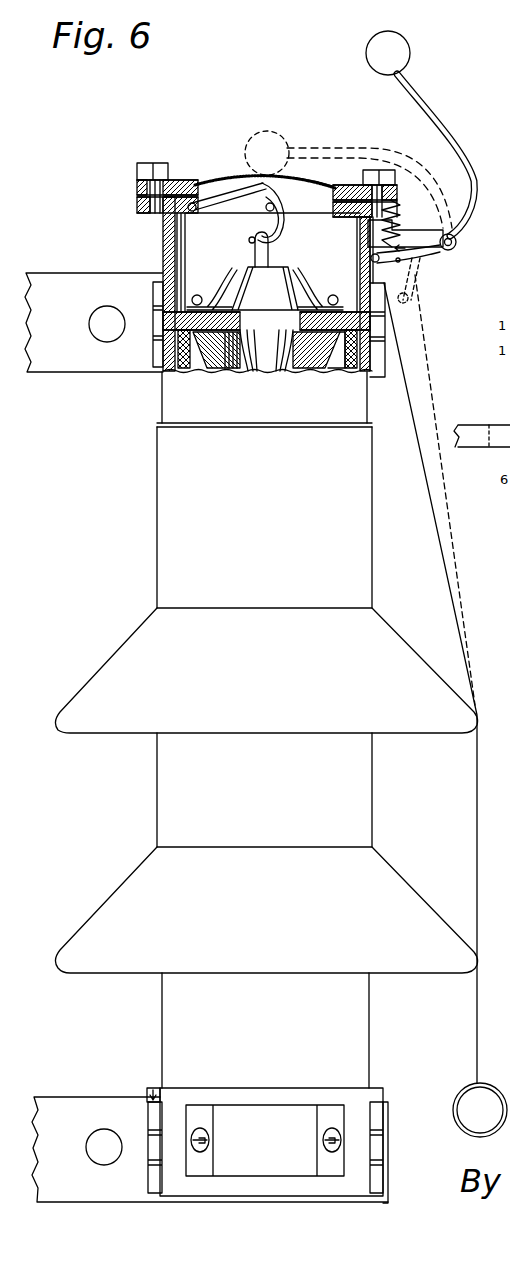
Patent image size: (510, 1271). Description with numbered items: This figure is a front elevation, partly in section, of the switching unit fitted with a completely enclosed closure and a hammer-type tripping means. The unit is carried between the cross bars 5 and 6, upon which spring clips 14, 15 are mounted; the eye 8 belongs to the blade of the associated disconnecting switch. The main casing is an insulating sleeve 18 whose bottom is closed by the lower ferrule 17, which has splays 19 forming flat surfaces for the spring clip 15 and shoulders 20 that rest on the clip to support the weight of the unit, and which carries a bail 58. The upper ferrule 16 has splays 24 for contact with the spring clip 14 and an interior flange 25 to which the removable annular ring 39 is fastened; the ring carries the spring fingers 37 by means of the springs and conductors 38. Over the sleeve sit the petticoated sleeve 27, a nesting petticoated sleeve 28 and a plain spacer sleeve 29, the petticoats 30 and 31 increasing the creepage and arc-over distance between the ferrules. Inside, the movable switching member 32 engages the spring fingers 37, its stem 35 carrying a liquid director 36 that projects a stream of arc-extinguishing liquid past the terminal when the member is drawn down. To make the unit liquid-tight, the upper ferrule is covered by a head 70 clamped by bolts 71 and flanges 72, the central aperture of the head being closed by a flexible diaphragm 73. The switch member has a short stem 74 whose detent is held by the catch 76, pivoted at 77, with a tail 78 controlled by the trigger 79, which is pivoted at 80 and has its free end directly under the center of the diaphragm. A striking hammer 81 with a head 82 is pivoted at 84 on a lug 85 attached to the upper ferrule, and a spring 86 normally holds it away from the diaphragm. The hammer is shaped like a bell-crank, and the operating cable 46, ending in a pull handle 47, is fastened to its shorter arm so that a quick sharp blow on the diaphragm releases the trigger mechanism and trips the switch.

The cross bar 5 is at (67, 353).
The cross bar 6 is at (44, 1105).
The eye 8 is at (208, 268).
The spring clip 14 is at (372, 330).
The spring clip 15 is at (378, 1147).
The ferrule 16 is at (339, 420).
The ferrule 17 is at (170, 1120).
The sleeve 18 is at (347, 373).
The splays 19 is at (382, 1180).
The shoulders 20 is at (153, 1090).
The splays 24 is at (147, 321).
The interior flange 25 is at (180, 318).
The petticoated sleeve 27 is at (168, 448).
The petticoated sleeve 28 is at (166, 753).
The plain sleeve 29 is at (165, 989).
The petticoat 30 is at (121, 658).
The petticoat 31 is at (143, 886).
The movable switching member 32 is at (162, 290).
The stem 35 is at (243, 352).
The liquid director 36 is at (348, 352).
The spring fingers 37 is at (200, 283).
The springs and conductors 38 is at (410, 300).
The removable annular ring 39 is at (353, 340).
The operating cable 46 is at (474, 818).
The pull handle 47 is at (466, 1090).
The bail 58 is at (272, 1120).
The head 70 is at (195, 200).
The bolts 71 is at (150, 170).
The flanges 72 is at (140, 190).
The flexible diaphragm 73 is at (230, 190).
The short stem 74 is at (250, 267).
The catch 76 is at (300, 217).
The pivot 77 is at (300, 173).
The tail 78 is at (263, 190).
The trigger 79 is at (253, 133).
The pivot 80 is at (207, 197).
The striking hammer 81 is at (455, 114).
The head 82 is at (388, 53).
The pivot 84 is at (457, 243).
The lug 85 is at (436, 252).
The spring 86 is at (397, 228).